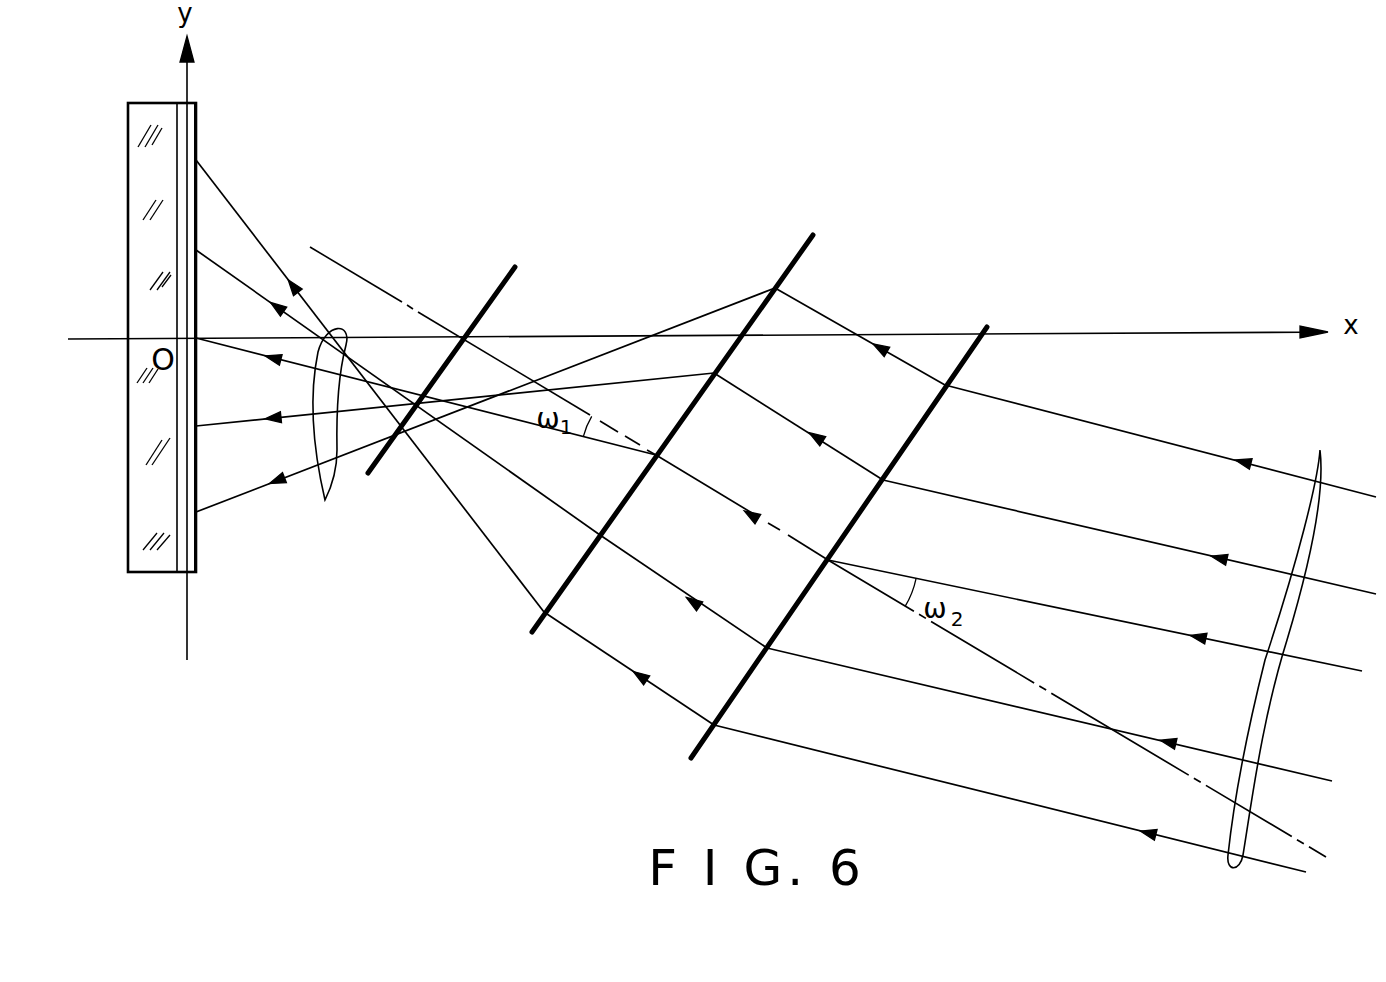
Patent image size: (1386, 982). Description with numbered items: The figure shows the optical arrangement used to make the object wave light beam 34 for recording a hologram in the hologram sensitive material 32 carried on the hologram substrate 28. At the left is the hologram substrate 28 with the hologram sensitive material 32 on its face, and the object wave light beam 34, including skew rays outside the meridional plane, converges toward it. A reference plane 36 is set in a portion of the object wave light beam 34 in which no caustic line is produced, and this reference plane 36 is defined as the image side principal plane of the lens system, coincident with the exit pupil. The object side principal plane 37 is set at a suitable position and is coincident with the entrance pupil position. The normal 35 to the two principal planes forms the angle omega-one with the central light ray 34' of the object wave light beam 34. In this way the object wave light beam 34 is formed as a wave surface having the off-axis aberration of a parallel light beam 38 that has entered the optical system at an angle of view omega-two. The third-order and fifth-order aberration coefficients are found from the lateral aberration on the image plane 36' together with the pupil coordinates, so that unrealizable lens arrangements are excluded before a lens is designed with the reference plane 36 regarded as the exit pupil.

The hologram substrate 28 is at (155, 110).
The hologram sensitive material 32 is at (198, 110).
The object wave light beam 34 is at (330, 434).
The central light ray 34' is at (562, 463).
The normal to the two principal planes 35 is at (367, 280).
The reference plane 36 is at (672, 411).
The image plane 36' is at (441, 332).
The object side principal plane 37 is at (967, 358).
The parallel light beam 38 is at (1321, 455).